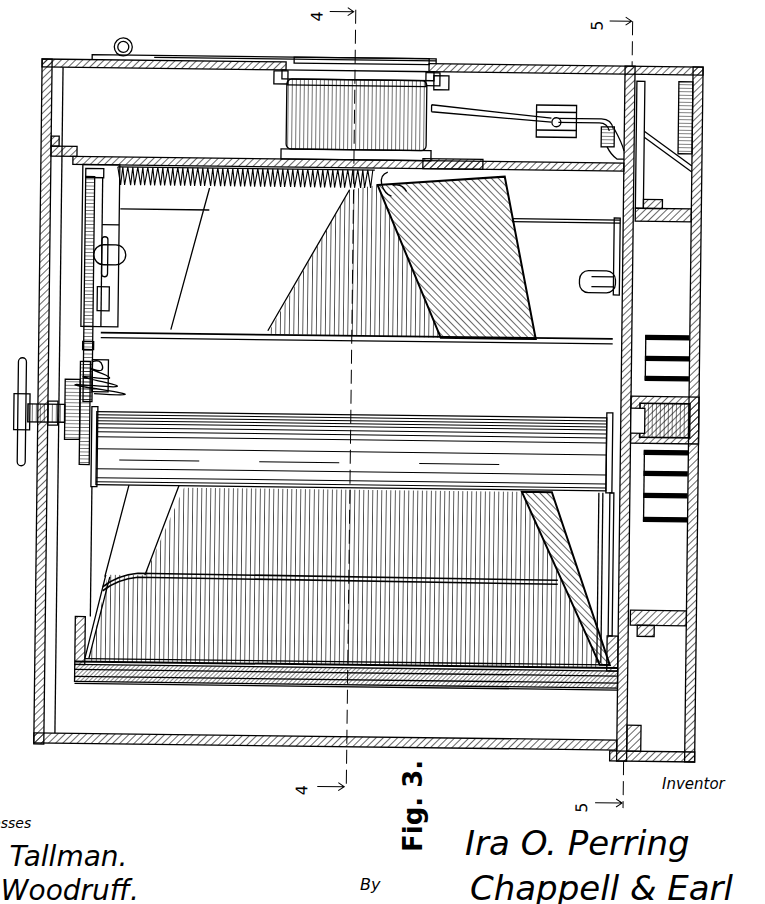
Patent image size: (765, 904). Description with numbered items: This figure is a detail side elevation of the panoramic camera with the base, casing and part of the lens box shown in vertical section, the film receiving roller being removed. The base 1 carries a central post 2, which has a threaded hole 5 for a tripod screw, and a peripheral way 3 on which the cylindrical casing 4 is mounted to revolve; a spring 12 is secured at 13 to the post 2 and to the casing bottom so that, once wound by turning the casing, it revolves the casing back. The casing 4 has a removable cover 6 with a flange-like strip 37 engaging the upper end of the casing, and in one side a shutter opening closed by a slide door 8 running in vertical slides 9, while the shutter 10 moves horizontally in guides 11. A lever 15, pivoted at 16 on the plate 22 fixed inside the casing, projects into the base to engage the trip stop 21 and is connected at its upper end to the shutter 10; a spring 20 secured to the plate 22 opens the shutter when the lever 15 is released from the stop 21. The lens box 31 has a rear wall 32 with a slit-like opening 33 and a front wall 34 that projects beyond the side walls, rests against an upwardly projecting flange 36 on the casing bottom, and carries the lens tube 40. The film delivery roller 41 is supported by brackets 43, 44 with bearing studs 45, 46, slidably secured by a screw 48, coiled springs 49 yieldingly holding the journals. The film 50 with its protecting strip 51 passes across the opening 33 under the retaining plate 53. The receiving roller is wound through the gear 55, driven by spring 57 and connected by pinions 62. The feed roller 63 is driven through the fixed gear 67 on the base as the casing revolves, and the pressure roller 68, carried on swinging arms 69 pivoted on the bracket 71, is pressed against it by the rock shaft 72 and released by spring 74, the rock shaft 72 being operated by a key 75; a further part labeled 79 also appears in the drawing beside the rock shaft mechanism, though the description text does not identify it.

The base 1 is at (699, 238).
The central post 2 is at (699, 398).
The peripheral way 3 is at (645, 80).
The casing 4 is at (500, 71).
The threaded hole 5 is at (699, 426).
The removable cover 6 is at (38, 300).
The slide closure or door 8 is at (128, 52).
The vertical slides 9 is at (250, 63).
The shutter 10 is at (330, 71).
The horizontally-arranged guides 11 is at (278, 85).
The spring 12 is at (655, 333).
The securing point of spring 13 is at (645, 733).
The lever 15 is at (590, 116).
The pivot 16 is at (553, 125).
The spring 20 is at (490, 110).
The trip stop 21 is at (699, 118).
The plate 22 is at (546, 98).
The lens box 31 is at (194, 250).
The rear wall 32 is at (96, 620).
The slit-like opening 33 is at (212, 685).
The front wall 34 is at (152, 160).
The flange 36 is at (598, 148).
The flange-like strip 37 is at (56, 140).
The lens tube 40 is at (288, 116).
The film delivery roller 41 is at (590, 220).
The brackets 43 is at (610, 222).
The brackets 44 is at (83, 245).
The bearing pins or studs 45 is at (580, 272).
The bearing pins or studs 46 is at (124, 262).
The screw 48 is at (442, 158).
The coiled springs 49 is at (200, 170).
The film 50 is at (246, 685).
The protecting strip 51 is at (386, 687).
The retaining plate 53 is at (152, 686).
The gear 55 is at (85, 332).
The spring 57 is at (106, 288).
The pinions 62 is at (83, 290).
The feed roller 63 is at (613, 500).
The gear 67 is at (650, 614).
The pressure roller 68 is at (594, 492).
The swinging arms 69 is at (93, 492).
The bracket 71 is at (83, 470).
The rock shaft 72 is at (285, 415).
The spring 74 is at (108, 378).
The key 75 is at (12, 398).
The gear 79 is at (68, 415).